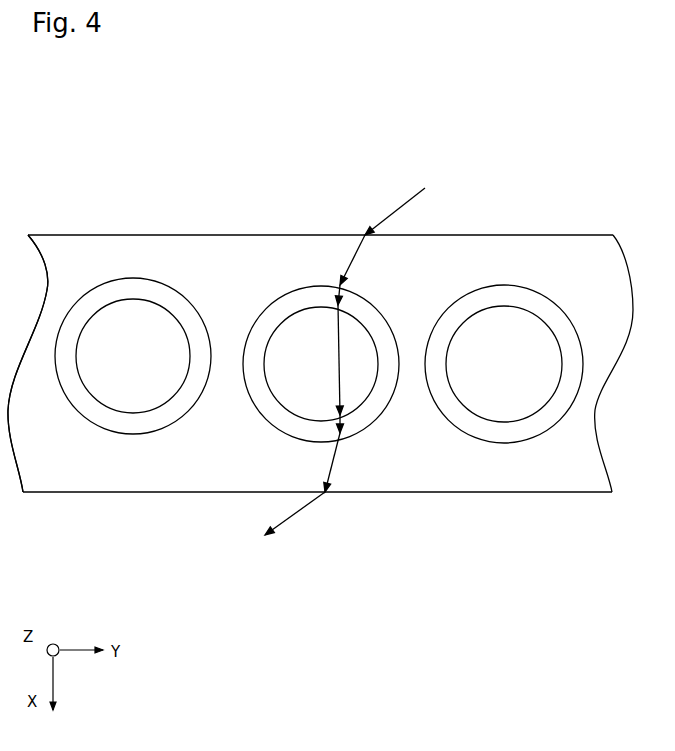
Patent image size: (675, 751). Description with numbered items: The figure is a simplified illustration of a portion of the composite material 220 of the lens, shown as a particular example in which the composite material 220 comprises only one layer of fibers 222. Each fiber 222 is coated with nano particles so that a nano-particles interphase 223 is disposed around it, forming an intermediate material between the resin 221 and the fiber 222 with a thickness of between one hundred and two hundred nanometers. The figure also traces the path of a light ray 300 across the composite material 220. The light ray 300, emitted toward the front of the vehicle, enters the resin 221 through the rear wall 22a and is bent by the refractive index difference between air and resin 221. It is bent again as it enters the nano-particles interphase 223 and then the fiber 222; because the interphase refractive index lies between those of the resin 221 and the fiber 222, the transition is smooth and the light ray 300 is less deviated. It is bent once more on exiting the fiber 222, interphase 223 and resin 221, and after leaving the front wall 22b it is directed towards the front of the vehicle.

The composite material 220 is at (250, 150).
The rear wall 22a is at (485, 236).
The front wall 22b is at (465, 493).
The resin 221 is at (60, 465).
The fiber 222 is at (292, 388).
The nano-particles interphase 223 is at (293, 305).
The light ray 300 is at (392, 213).